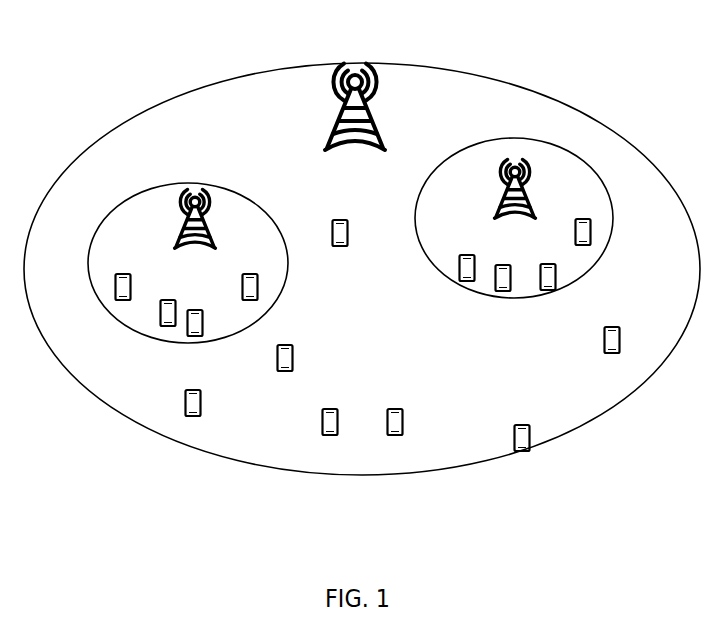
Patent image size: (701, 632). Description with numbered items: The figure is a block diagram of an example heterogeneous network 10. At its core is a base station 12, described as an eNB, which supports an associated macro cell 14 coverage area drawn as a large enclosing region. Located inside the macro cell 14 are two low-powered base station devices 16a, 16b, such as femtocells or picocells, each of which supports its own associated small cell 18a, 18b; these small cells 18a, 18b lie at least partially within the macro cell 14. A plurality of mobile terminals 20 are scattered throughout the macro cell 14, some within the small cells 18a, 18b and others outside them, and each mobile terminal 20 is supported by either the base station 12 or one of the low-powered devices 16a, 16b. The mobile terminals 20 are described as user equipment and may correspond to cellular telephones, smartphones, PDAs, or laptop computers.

The heterogeneous network 10 is at (142, 60).
The base station 12 is at (342, 122).
The macro cell 14 is at (110, 133).
The low-powered base station device 16a is at (213, 248).
The low-powered base station device 16b is at (528, 207).
The small cell 18a is at (288, 270).
The small cell 18b is at (417, 222).
The mobile terminal 20 is at (258, 296).